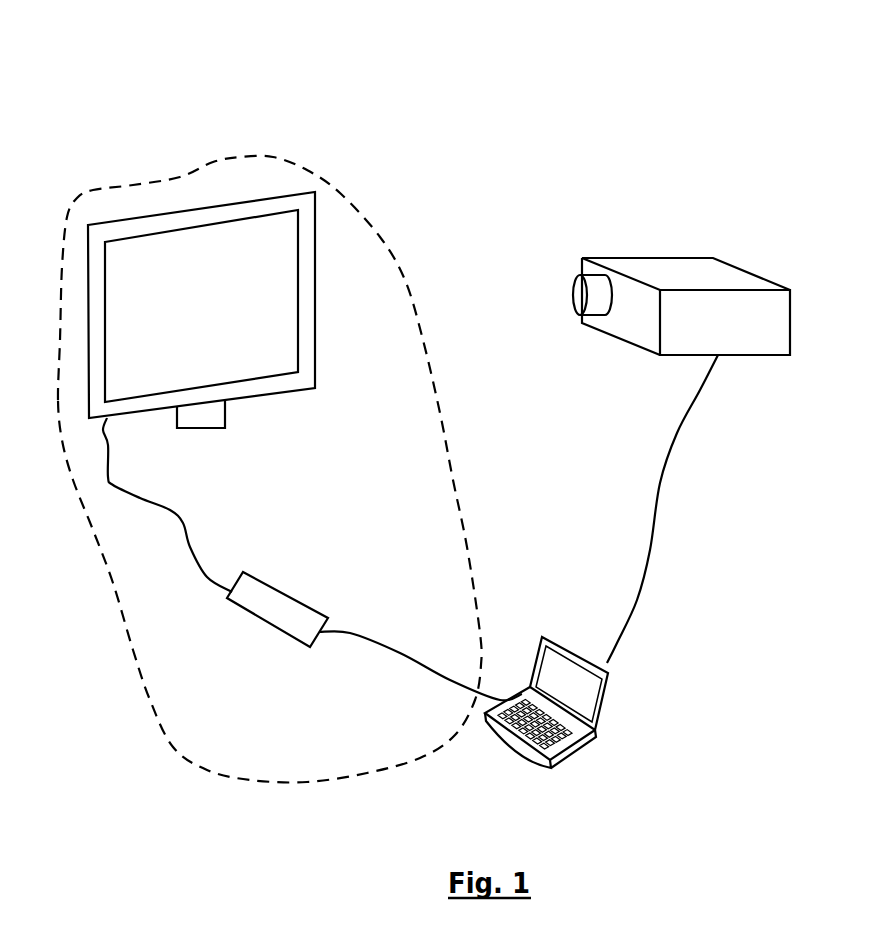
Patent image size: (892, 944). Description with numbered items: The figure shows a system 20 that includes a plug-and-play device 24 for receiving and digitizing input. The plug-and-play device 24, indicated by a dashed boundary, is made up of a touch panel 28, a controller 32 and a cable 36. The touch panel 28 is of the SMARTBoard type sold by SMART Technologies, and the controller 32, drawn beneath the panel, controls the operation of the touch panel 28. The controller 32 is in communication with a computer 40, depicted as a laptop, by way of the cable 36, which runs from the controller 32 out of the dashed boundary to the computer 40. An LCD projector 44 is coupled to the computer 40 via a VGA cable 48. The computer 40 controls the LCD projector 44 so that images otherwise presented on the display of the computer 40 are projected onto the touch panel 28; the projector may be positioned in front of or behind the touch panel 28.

The system 20 is at (520, 130).
The plug-and-play device 24 is at (400, 277).
The touch panel 28 is at (215, 317).
The controller 32 is at (205, 430).
The cable 36 is at (283, 648).
The computer 40 is at (550, 762).
The LCD projector 44 is at (677, 257).
The VGA cable 48 is at (652, 547).